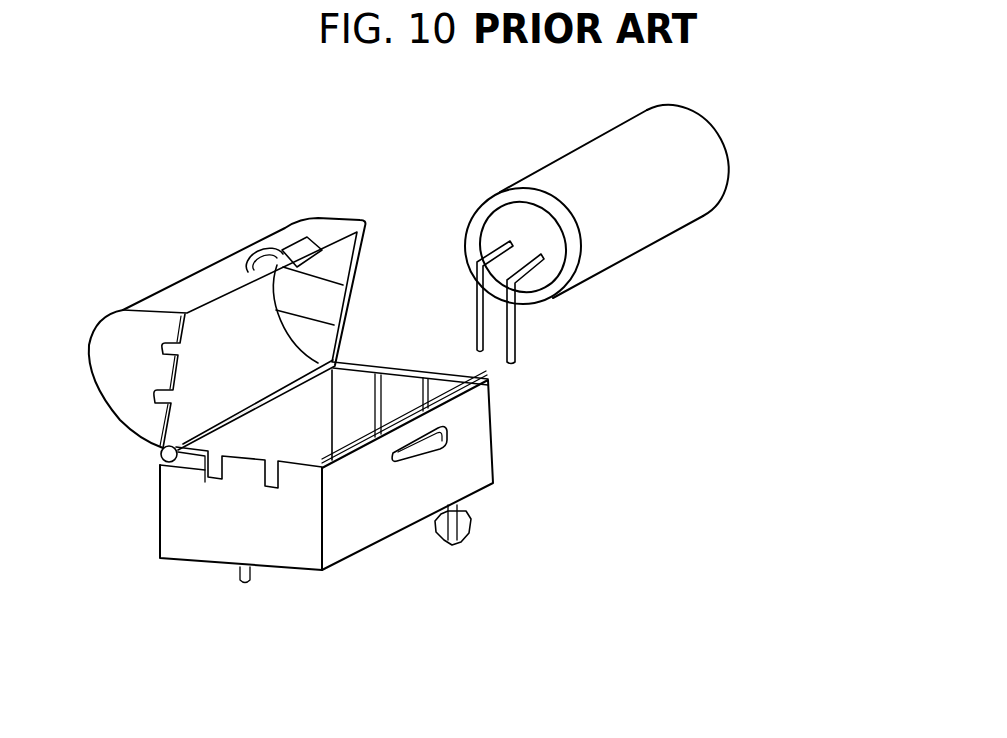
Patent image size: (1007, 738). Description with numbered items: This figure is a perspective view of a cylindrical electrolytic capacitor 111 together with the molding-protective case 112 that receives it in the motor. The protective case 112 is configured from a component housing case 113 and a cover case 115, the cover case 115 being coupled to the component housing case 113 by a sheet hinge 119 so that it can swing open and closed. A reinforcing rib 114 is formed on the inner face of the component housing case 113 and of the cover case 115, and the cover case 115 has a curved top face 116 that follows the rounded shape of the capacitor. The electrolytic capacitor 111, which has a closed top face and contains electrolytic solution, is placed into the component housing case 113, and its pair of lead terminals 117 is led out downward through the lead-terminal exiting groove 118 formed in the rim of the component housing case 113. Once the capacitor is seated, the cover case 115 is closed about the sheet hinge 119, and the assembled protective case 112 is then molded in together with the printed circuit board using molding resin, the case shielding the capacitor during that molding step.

The electrolytic capacitor 111 is at (635, 238).
The protective case 112 is at (482, 472).
The component housing case 113 is at (354, 517).
The reinforcing rib 114 is at (351, 323).
The cover case 115 is at (118, 422).
The curved top face 116 is at (240, 361).
The lead terminals 117 is at (518, 343).
The lead-terminal exiting groove 118 is at (205, 483).
The sheet hinge 119 is at (262, 403).